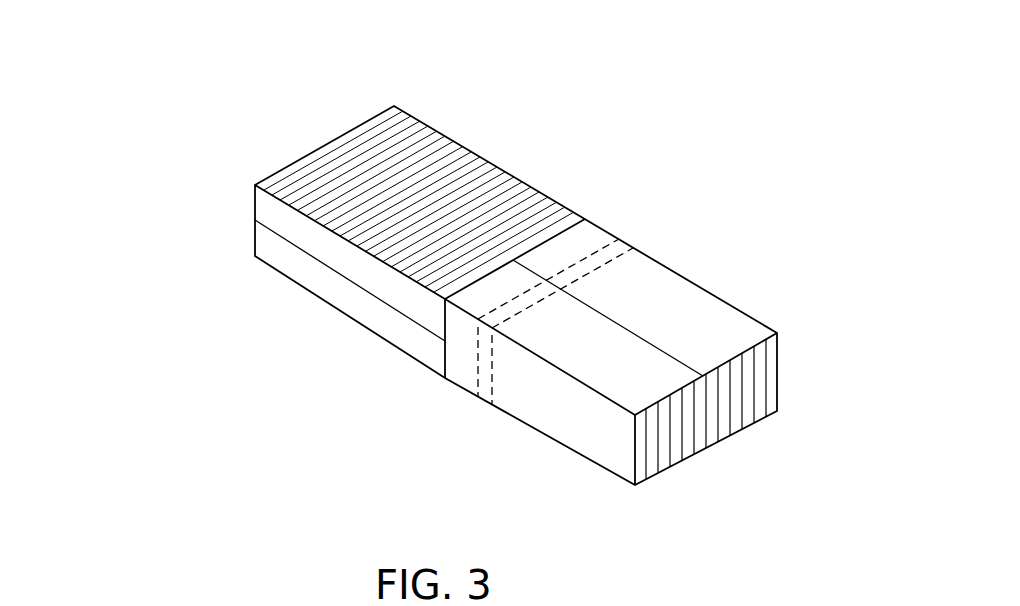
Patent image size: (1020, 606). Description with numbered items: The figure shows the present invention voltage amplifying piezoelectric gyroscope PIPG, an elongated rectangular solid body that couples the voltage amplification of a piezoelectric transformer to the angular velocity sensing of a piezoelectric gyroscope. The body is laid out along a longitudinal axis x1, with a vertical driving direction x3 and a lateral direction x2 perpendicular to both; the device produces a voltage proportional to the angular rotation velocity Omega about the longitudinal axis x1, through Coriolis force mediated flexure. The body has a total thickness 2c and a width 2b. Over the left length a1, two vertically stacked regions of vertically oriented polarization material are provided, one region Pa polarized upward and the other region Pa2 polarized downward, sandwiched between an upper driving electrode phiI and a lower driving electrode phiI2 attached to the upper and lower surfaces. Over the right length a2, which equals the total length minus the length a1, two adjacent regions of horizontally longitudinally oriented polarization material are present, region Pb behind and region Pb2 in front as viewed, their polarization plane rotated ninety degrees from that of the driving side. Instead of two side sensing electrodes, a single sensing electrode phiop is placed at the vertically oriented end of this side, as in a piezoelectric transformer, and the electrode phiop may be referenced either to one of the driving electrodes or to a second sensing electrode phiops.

The present invention piezoelectric-gyroscope PIPG is at (658, 142).
The driving voltage electrode phiI is at (320, 165).
The driving voltage electrode phiI2 is at (290, 277).
The second sensing electrode phiops is at (635, 240).
The sensing electrode phiop is at (750, 389).
The longitudinal axis x1 is at (702, 410).
The lateral axis x2 is at (488, 162).
The driving voltage direction axis x3 is at (327, 160).
The angular rotation velocity Omega is at (837, 490).
The thickness 2c is at (213, 160).
The width 2b is at (777, 420).
The driving section length a1 is at (445, 430).
The sensing section length a2 is at (633, 541).
The upward polarization direction region Pa is at (316, 255).
The downward polarization direction region Pa2 is at (340, 272).
The horizontally oriented polarization region Pb is at (643, 295).
The horizontally oriented polarization region Pb2 is at (567, 332).